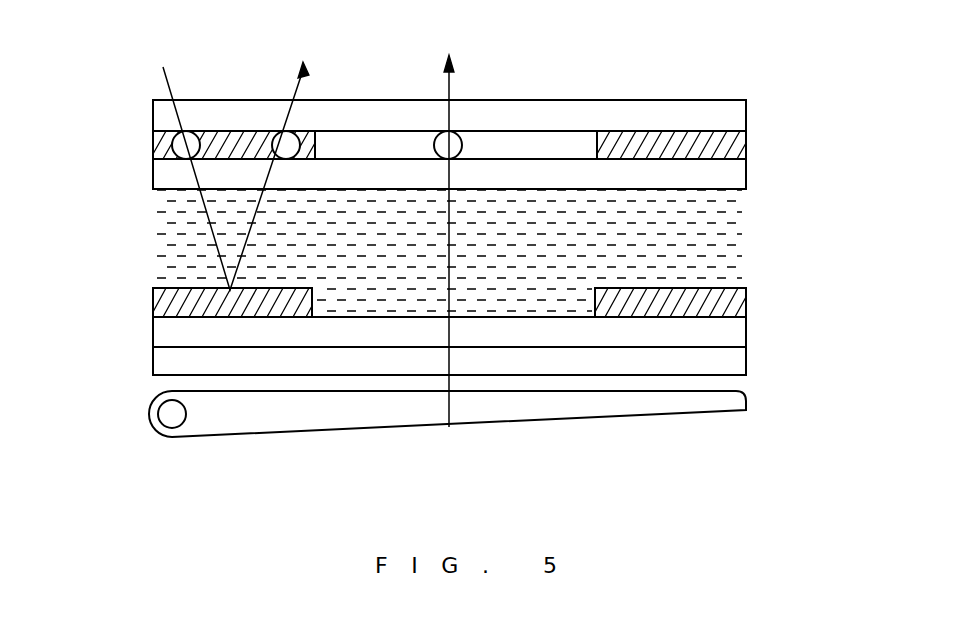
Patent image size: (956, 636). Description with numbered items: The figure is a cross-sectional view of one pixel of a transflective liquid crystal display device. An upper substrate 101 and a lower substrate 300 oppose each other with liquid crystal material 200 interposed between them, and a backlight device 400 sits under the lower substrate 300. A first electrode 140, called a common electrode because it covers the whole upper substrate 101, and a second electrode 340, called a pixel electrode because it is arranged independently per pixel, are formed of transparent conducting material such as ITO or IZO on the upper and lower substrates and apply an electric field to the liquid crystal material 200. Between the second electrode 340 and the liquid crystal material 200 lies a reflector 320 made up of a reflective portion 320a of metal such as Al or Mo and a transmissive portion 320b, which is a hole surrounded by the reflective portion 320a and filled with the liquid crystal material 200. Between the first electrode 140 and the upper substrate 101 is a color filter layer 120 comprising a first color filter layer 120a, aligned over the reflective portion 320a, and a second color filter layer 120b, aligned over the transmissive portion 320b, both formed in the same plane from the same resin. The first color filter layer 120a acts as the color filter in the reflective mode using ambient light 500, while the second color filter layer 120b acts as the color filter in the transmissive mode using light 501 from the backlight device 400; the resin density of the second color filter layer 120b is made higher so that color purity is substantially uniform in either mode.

The upper substrate 101 is at (162, 118).
The color filter layer 120 is at (471, 91).
The first color filter layer 120a is at (648, 133).
The second color filter layer 120b is at (567, 147).
The first electrode 140 is at (730, 175).
The liquid crystal material 200 is at (177, 237).
The reflector 320 is at (537, 257).
The reflective portion 320a is at (703, 307).
The transmissive portion 320b is at (550, 300).
The second electrode 340 is at (732, 333).
The lower substrate 300 is at (738, 368).
The backlight device 400 is at (157, 413).
The ambient light 500 is at (228, 164).
The light from the backlight device 501 is at (453, 227).